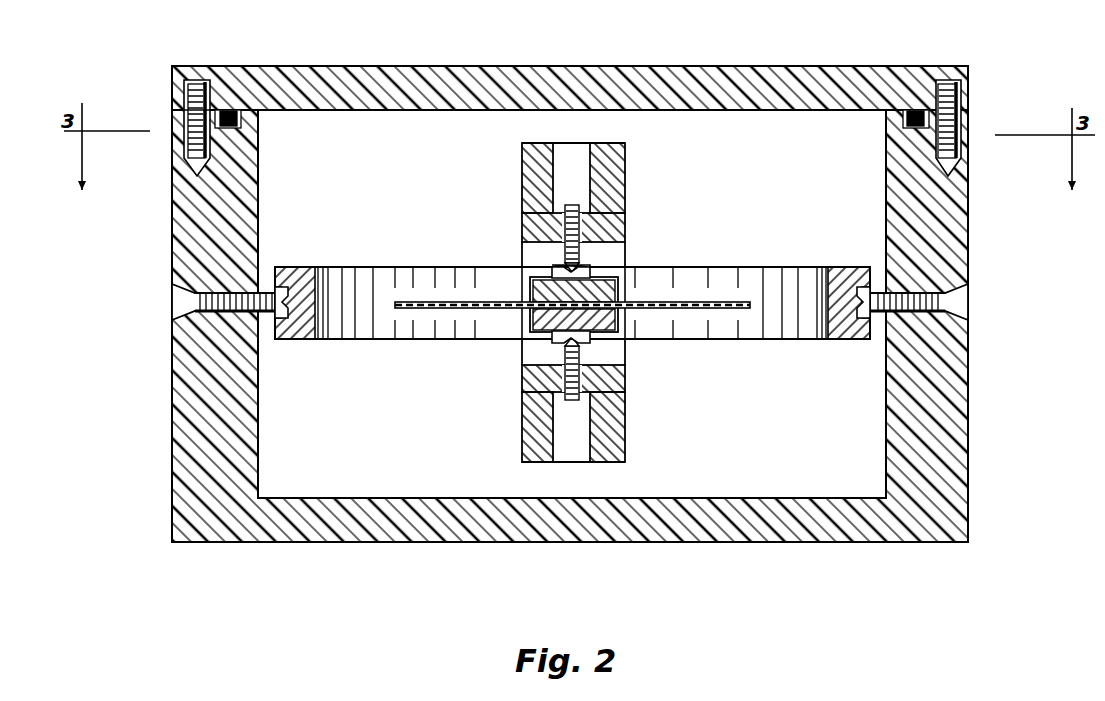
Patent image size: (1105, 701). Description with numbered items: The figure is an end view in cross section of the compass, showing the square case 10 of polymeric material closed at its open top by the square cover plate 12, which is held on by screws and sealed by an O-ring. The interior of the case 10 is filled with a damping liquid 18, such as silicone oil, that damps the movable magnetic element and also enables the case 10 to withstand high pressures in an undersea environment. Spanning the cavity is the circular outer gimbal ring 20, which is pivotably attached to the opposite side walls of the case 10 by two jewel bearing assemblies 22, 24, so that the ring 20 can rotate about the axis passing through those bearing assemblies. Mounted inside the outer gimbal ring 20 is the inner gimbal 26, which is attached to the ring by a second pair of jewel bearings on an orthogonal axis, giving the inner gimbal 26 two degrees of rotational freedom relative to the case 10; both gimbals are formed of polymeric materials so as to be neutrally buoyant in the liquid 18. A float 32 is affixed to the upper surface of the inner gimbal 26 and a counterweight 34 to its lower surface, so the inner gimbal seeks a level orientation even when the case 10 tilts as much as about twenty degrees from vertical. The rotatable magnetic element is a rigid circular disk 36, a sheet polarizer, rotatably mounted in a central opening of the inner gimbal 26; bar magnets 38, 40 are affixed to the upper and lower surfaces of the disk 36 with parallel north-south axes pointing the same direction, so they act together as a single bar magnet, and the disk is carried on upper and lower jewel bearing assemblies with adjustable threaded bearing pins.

The case 10 is at (968, 447).
The cover plate 12 is at (748, 66).
The liquid 18 is at (815, 449).
The outer gimbal ring 20 is at (370, 286).
The jewel bearing assembly 22 is at (880, 287).
The jewel bearing assembly 24 is at (268, 286).
The inner gimbal 26 is at (626, 227).
The float 32 is at (620, 160).
The counterweight 34 is at (612, 426).
The disk 36 is at (682, 300).
The bar magnet 38 is at (528, 278).
The bar magnet 40 is at (525, 340).